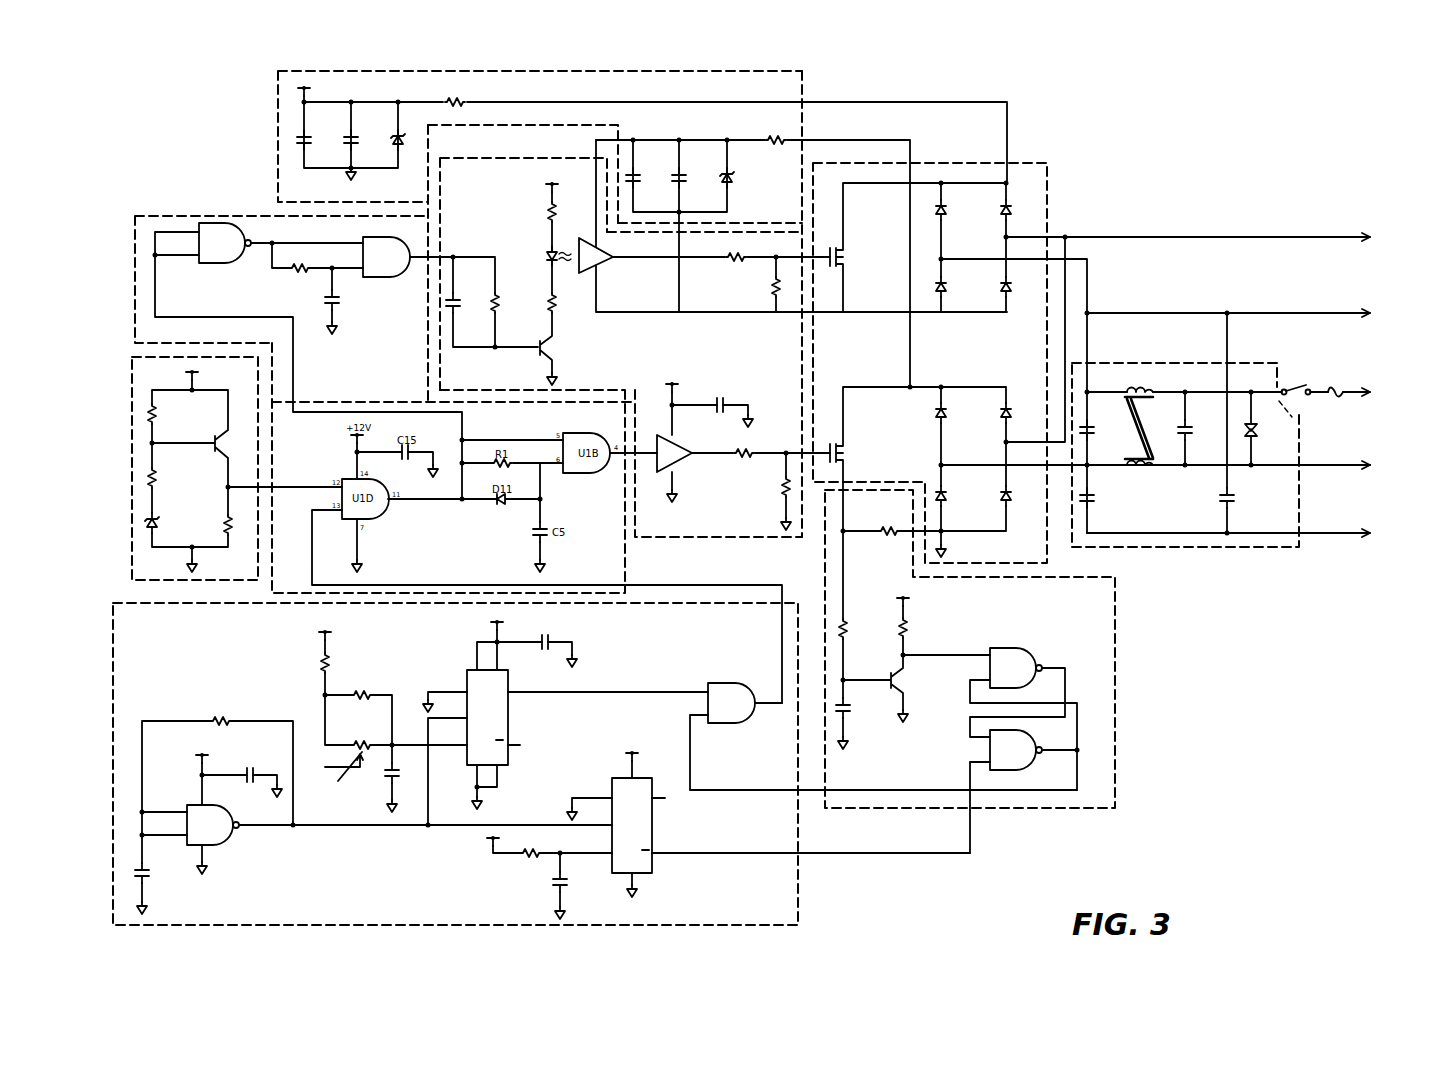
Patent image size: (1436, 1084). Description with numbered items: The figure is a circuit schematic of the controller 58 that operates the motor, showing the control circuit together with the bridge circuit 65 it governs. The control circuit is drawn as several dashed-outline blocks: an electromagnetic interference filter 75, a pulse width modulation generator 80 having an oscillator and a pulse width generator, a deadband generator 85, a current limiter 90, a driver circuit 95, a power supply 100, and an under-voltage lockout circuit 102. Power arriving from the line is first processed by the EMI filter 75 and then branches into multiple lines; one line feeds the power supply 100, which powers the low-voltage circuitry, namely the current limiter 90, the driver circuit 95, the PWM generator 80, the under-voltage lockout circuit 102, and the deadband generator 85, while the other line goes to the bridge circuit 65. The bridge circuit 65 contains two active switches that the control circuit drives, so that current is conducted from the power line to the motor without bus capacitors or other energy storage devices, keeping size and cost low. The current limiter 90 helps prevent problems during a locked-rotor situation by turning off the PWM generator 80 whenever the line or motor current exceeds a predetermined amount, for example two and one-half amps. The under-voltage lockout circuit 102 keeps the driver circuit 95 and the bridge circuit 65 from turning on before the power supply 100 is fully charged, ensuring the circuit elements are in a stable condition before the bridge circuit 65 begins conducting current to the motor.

The controller 58 is at (1182, 735).
The bridge circuit 65 is at (1020, 163).
The electromagnetic interference (EMI) filter 75 is at (1257, 550).
The pulse width modulation (PWM) generator 80 is at (800, 878).
The deadband generator 85 is at (135, 253).
The current limiter 90 is at (1120, 765).
The driver circuit 95 is at (767, 552).
The power supply 100 is at (278, 99).
The under-voltage lockout circuit 102 is at (130, 427).